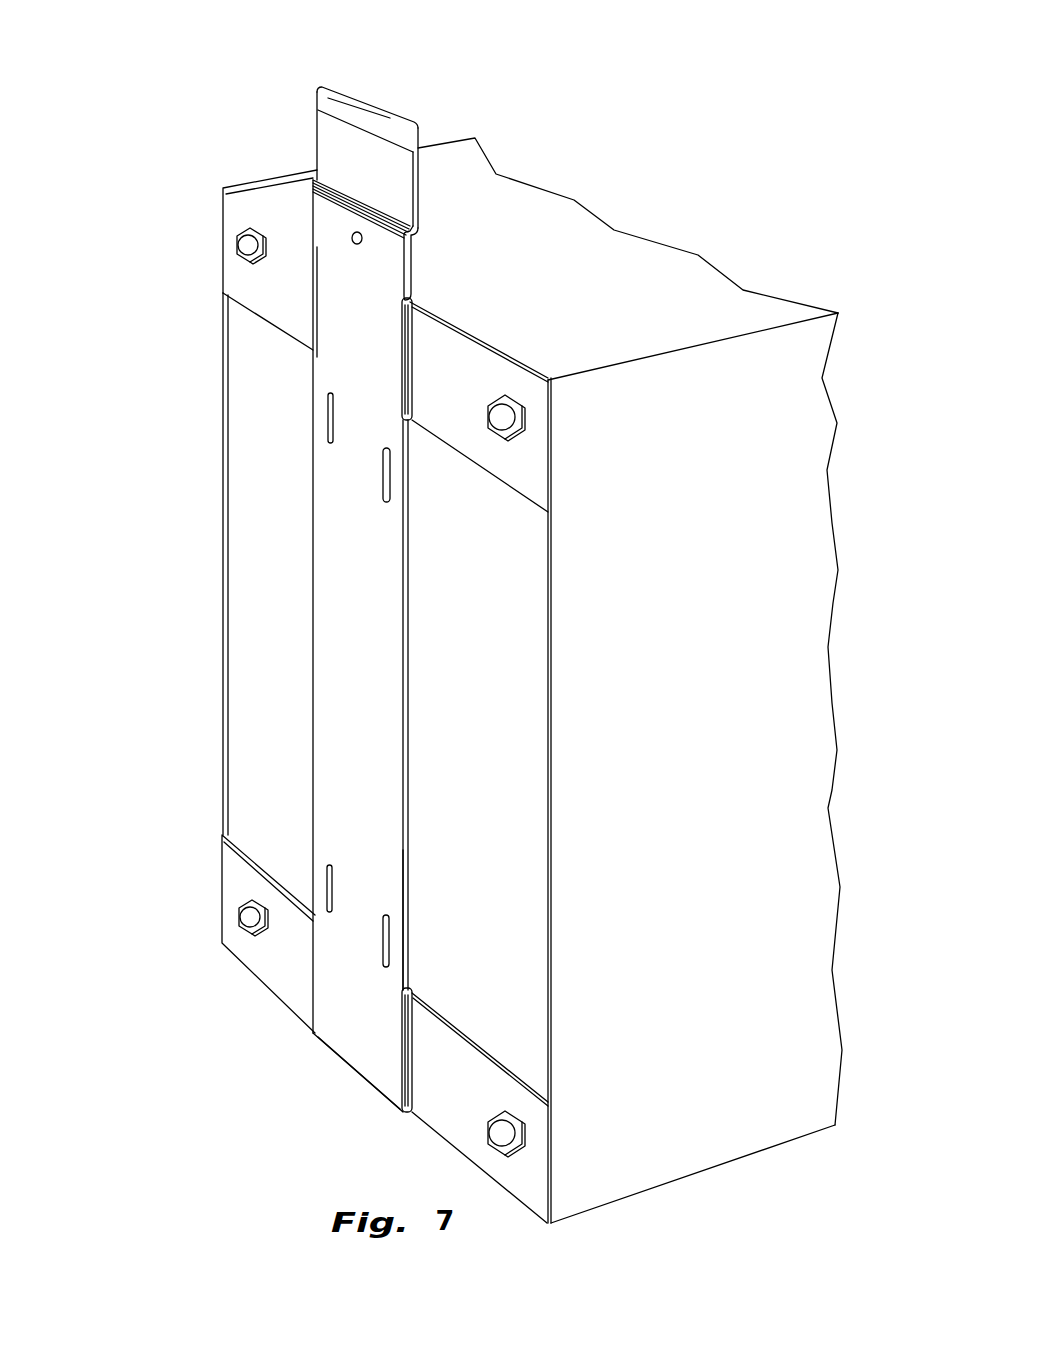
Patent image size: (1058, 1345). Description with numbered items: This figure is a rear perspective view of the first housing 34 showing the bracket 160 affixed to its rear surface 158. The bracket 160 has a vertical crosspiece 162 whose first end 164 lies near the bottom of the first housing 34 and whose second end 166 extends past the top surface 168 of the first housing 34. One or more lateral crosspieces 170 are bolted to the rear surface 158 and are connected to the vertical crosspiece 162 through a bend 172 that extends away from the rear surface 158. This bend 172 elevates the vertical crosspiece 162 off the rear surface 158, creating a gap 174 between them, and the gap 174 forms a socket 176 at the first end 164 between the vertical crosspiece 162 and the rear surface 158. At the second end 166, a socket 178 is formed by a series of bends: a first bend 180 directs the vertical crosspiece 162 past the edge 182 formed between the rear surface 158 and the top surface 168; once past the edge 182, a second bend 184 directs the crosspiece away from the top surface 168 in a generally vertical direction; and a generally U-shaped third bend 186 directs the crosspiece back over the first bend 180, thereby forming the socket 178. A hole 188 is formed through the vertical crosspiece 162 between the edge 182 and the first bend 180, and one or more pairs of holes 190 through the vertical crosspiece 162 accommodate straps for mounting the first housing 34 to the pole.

The first housing 34 is at (820, 592).
The rear surface 158 is at (490, 735).
The bracket 160 is at (347, 602).
The vertical crosspiece 162 is at (407, 657).
The first end 164 is at (322, 1048).
The second end 166 is at (380, 96).
The top surface 168 is at (585, 280).
The lateral crosspieces 170 is at (228, 218).
The bend 172 is at (411, 380).
The gap 174 is at (413, 935).
The socket 176 is at (369, 1094).
The socket 178 is at (421, 153).
The first bend 180 is at (400, 228).
The edge 182 is at (478, 332).
The second bend 184 is at (412, 231).
The third bend 186 is at (397, 115).
The hole 188 is at (352, 245).
The pairs of holes 190 is at (357, 667).